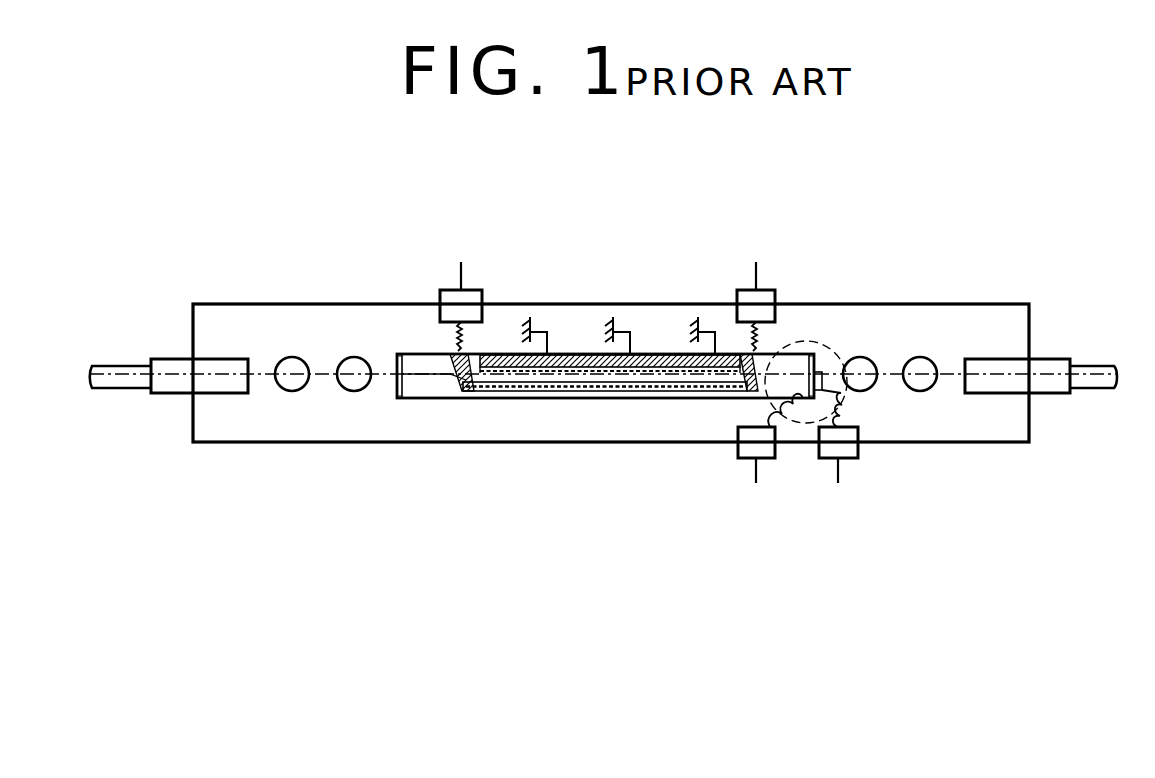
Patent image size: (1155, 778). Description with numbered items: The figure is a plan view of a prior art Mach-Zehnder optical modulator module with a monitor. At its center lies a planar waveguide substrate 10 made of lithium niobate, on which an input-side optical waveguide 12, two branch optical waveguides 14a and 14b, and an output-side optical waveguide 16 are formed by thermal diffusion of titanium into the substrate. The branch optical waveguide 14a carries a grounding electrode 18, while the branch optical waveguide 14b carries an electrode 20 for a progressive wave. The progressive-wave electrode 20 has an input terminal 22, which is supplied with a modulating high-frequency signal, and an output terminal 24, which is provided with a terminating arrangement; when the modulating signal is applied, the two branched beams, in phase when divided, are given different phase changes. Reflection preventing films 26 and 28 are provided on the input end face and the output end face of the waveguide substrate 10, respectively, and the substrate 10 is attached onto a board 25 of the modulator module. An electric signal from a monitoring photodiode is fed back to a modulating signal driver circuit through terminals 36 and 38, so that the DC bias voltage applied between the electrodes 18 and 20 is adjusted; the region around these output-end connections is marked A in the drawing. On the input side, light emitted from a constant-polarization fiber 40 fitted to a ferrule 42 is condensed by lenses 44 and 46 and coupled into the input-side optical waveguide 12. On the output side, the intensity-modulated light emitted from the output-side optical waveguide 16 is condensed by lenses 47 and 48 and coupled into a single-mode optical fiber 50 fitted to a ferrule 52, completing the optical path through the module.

The planar waveguide substrate 10 is at (804, 358).
The input-side optical waveguide 12 is at (418, 380).
The branch optical waveguide 14a is at (573, 354).
The branch optical waveguide 14b is at (573, 400).
The output-side optical waveguide 16 is at (794, 356).
The grounding electrode 18 is at (649, 354).
The electrode for a progressive wave 20 is at (658, 400).
The input terminal 22 is at (482, 290).
The output terminal 24 is at (736, 290).
The board 25 is at (480, 433).
The reflection preventing film 26 is at (392, 390).
The reflection preventing film 28 is at (826, 362).
The terminal 36 is at (738, 458).
The terminal 38 is at (858, 458).
The constant-polarization fiber 40 is at (113, 366).
The ferrule 42 is at (170, 359).
The lens 44 is at (292, 357).
The lens 46 is at (355, 357).
The lens 47 is at (873, 360).
The lens 48 is at (932, 360).
The single-mode optical fiber 50 is at (1085, 366).
The ferrule 52 is at (1060, 393).
The detail region A is at (801, 427).